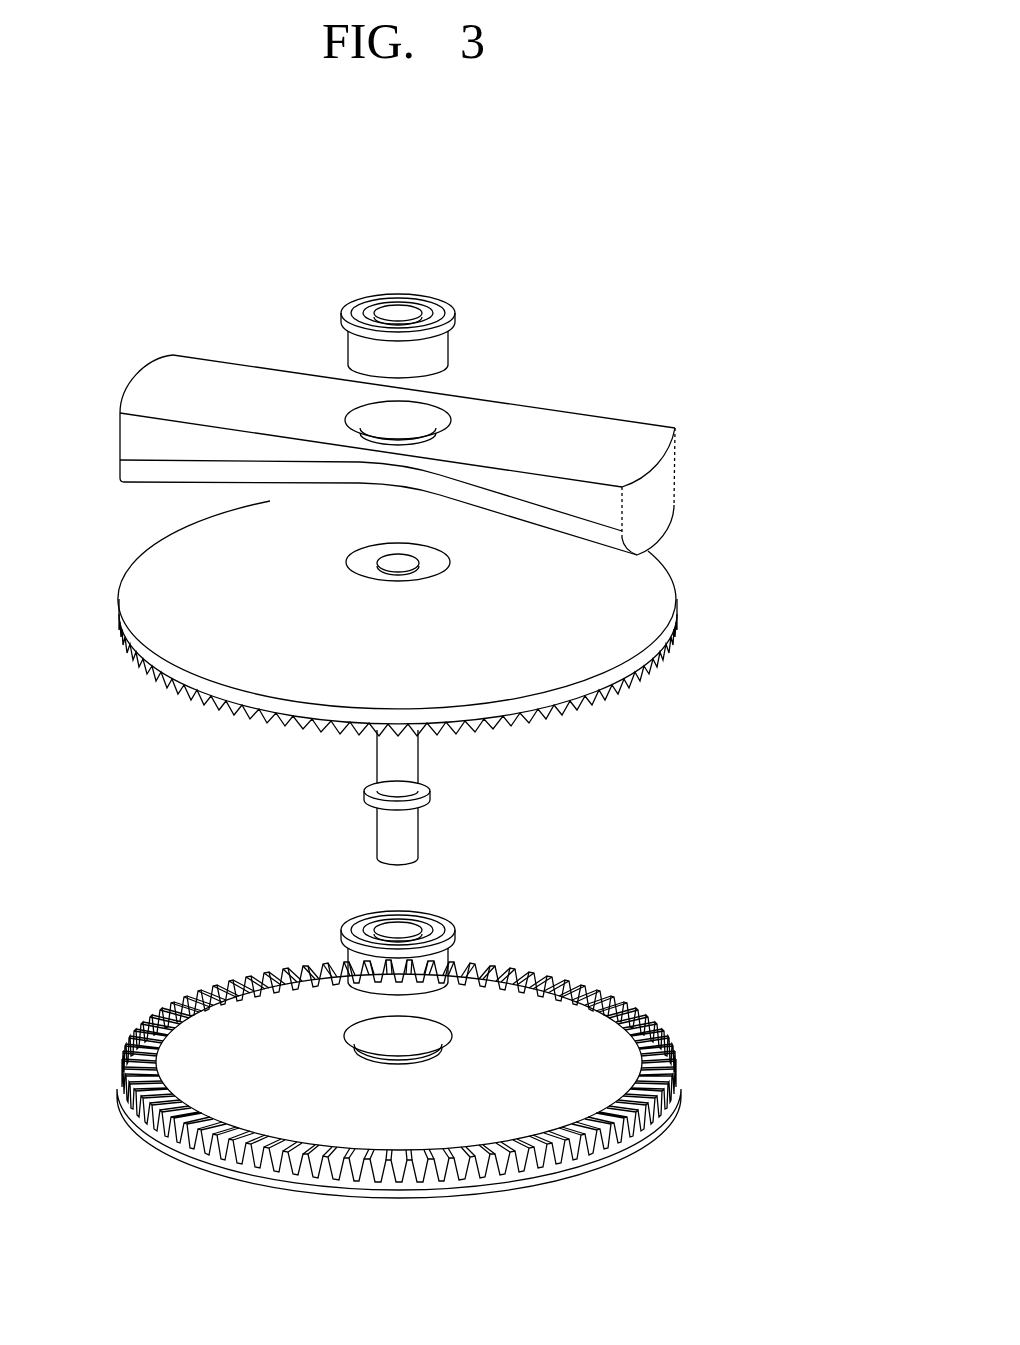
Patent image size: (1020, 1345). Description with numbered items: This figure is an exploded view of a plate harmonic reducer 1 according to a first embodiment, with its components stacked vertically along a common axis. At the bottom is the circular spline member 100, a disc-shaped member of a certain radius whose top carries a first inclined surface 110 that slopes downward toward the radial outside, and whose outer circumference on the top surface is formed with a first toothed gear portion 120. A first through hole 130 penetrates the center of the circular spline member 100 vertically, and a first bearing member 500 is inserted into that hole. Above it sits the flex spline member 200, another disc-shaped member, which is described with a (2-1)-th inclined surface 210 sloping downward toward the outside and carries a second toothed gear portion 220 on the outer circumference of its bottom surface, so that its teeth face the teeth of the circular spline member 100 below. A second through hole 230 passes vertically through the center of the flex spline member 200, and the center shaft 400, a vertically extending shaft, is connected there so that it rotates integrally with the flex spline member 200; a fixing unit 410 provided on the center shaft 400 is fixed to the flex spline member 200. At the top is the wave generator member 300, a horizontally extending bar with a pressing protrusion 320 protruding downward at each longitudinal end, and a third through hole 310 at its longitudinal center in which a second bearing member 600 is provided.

The plate harmonic reducer 1 is at (639, 243).
The circular spline member 100 is at (667, 1002).
The first inclined surface 110 is at (207, 1030).
The first toothed gear portion 120 is at (668, 1073).
The first through hole 130 is at (370, 1048).
The flex spline member 200 is at (693, 581).
The (2-1)-th inclined surface 210 is at (138, 575).
The second toothed gear portion 220 is at (640, 672).
The second through hole 230 is at (375, 563).
The wave generator member 300 is at (601, 387).
The third through hole 310 is at (440, 412).
The pressing protrusion 320 is at (657, 487).
The center shaft 400 is at (453, 802).
The fixing unit 410 is at (364, 798).
The first bearing member 500 is at (473, 299).
The second bearing member 600 is at (476, 926).